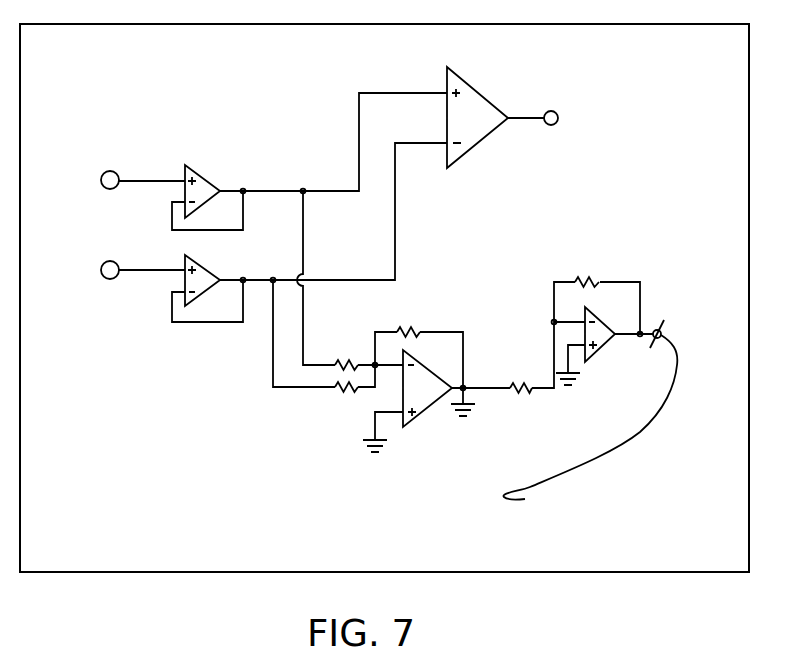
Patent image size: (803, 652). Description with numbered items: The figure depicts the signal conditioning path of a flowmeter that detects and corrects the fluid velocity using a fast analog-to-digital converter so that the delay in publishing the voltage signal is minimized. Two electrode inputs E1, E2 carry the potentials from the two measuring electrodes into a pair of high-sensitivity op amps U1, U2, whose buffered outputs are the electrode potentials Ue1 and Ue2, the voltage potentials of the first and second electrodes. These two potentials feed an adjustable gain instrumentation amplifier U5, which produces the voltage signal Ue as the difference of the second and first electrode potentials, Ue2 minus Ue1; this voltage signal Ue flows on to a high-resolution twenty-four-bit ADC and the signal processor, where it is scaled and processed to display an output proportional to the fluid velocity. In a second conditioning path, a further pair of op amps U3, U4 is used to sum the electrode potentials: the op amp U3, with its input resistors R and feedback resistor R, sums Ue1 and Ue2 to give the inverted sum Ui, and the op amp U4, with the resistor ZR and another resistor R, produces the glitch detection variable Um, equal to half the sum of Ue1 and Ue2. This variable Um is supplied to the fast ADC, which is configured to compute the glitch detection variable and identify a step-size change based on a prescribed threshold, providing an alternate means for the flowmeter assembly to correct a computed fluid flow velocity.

The first input terminal (electrode 1) E1 is at (93, 260).
The second input terminal (electrode 2) E2 is at (93, 170).
The first buffer amplifier U1 is at (202, 181).
The second buffer amplifier U2 is at (202, 270).
The summing amplifier U3 is at (427, 382).
The inverting amplifier U4 is at (604, 329).
The instrumentation amplifier U5 is at (477, 115).
The resistor R is at (467, 337).
The resistor of value Z*R ZR is at (518, 371).
The voltage potential of a first electrode Ue1 is at (243, 280).
The voltage potential of a second electrode Ue2 is at (243, 191).
The voltage signal Ue is at (639, 166).
The inverted sum voltage Ui is at (505, 437).
The glitch detection variable Um is at (688, 499).